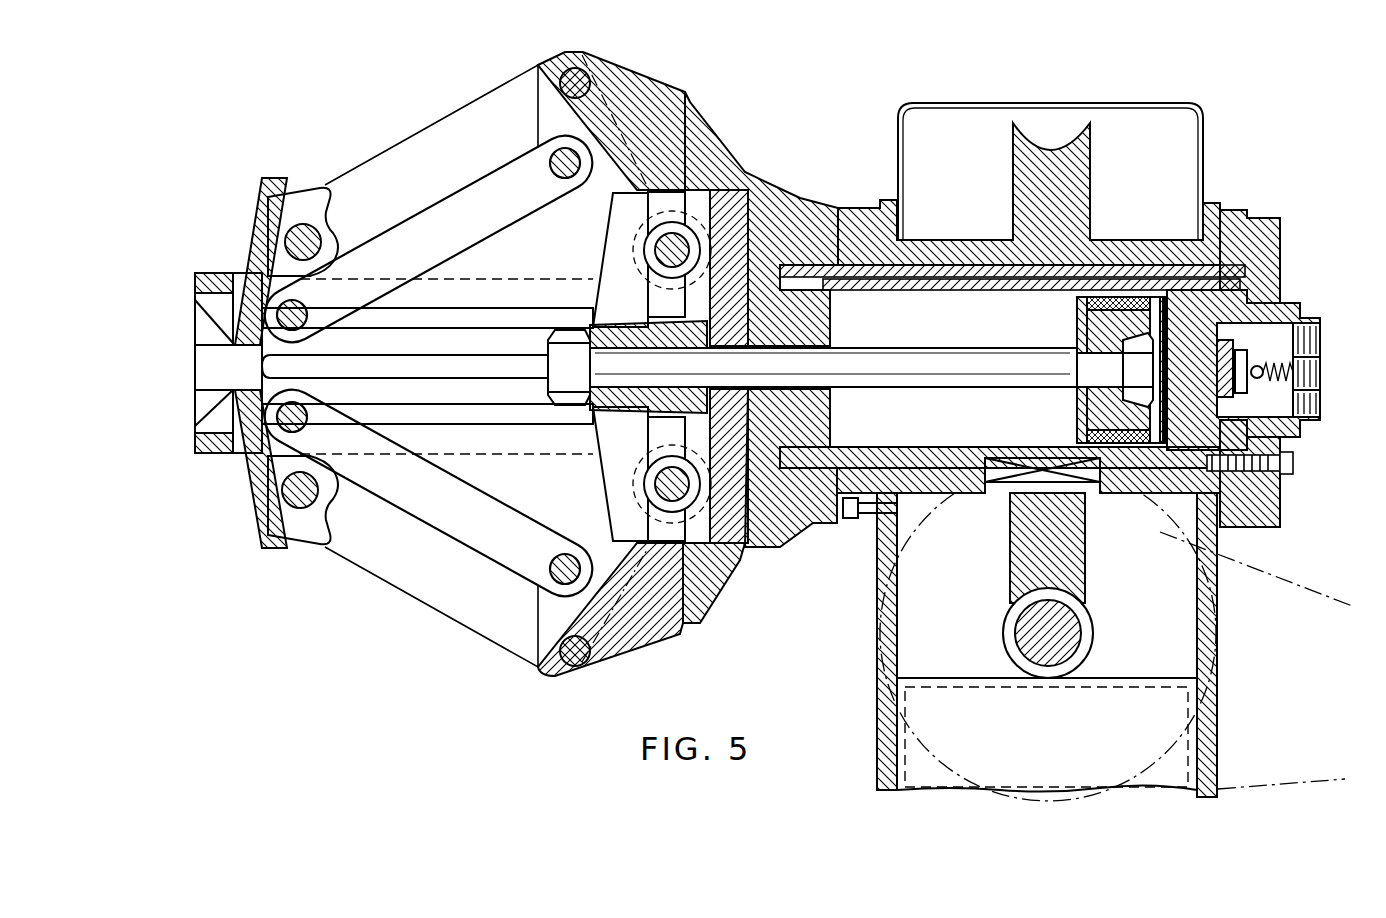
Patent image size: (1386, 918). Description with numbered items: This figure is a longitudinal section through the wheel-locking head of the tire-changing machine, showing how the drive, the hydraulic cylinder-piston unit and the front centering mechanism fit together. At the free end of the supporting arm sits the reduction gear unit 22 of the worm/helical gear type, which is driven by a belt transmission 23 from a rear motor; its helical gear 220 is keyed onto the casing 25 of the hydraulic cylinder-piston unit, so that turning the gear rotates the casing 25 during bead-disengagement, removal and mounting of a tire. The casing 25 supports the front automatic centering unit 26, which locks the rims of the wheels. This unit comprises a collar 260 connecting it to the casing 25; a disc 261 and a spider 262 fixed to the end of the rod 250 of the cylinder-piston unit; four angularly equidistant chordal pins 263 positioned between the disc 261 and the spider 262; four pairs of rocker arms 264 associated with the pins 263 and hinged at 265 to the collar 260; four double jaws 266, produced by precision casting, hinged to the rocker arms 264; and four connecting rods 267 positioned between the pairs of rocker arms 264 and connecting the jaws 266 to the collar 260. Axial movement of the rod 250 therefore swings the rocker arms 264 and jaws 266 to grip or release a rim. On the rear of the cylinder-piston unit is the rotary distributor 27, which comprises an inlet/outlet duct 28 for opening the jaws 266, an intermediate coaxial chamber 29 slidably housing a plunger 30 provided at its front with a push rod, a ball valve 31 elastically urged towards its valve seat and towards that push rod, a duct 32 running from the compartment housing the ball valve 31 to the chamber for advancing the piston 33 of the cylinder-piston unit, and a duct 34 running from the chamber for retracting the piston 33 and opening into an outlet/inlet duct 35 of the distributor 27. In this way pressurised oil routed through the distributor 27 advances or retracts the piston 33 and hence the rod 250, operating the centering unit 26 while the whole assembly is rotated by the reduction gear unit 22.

The reduction gear unit 22 is at (1092, 617).
The belt transmission 23 is at (1276, 575).
The casing of hydraulic cylinder-piston unit 25 is at (905, 448).
The automatic centering unit 26 is at (388, 608).
The rotary distributor 27 is at (1303, 318).
The inlet/outlet duct 28 is at (1320, 338).
The intermediate coaxial chamber 29 is at (1213, 357).
The plunger 30 is at (1227, 384).
The ball valve 31 is at (1310, 372).
The duct 32 is at (1290, 462).
The piston 33 is at (1097, 320).
The duct 34 is at (923, 278).
The outlet/inlet duct 35 is at (1318, 405).
The helical gear 220 is at (1010, 560).
The rod 250 is at (988, 383).
The collar 260 is at (712, 600).
The disc 261 is at (752, 535).
The spider 262 is at (603, 487).
The chordal pins 263 is at (662, 252).
The rocker arms 264 is at (428, 133).
The hinge 265 is at (598, 82).
The double jaws 266 is at (252, 270).
The connecting rods 267 is at (393, 235).